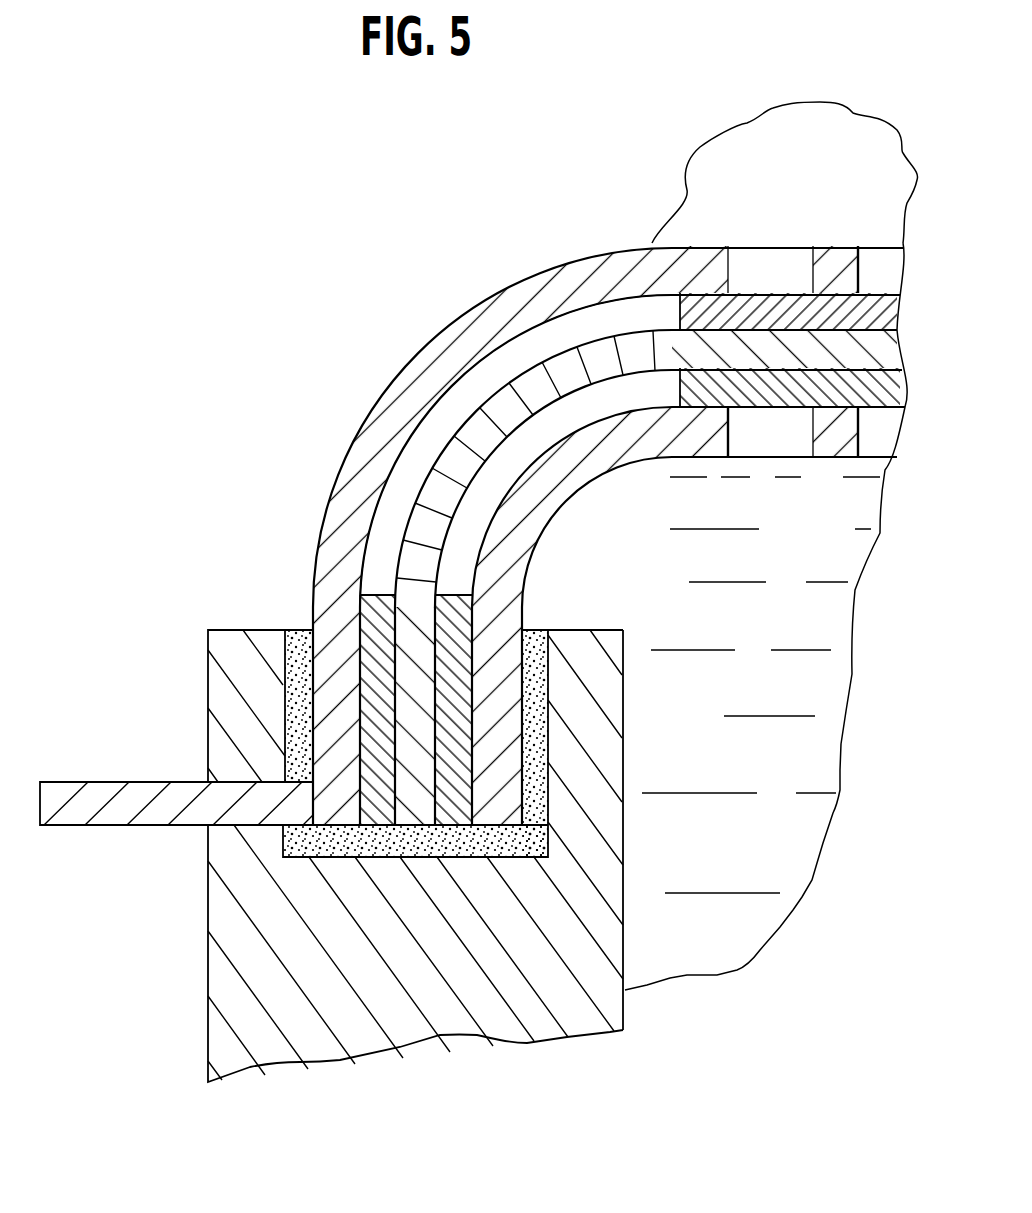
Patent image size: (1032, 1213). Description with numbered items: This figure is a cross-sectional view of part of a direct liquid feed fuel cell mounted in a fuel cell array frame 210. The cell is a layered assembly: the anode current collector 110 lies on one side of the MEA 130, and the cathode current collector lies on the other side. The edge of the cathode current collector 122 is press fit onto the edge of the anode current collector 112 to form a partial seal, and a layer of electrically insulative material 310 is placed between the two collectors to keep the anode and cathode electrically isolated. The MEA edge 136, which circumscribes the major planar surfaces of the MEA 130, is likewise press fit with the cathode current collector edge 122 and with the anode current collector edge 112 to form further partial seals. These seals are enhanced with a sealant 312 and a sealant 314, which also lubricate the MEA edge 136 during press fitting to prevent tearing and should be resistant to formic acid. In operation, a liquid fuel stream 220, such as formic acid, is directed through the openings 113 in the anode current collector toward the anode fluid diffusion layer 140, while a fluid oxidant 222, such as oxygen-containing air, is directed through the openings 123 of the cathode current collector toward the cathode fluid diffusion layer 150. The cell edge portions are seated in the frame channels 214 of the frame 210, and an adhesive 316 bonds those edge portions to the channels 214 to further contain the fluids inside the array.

The anode current collector 110 is at (577, 433).
The anode current collector edge 112 is at (517, 574).
The openings in the anode current collector major planar portion 113 is at (880, 443).
The cathode current collector edge 122 is at (345, 455).
The openings of the cathode current collector major planar portion 123 is at (747, 263).
The MEA 130 is at (547, 367).
The MEA edge 136 is at (400, 533).
The anode fluid diffusion layer 140 is at (563, 529).
The cathode fluid diffusion layer 150 is at (548, 305).
The frame 210 is at (205, 975).
The fuel cell array frame channels 214 is at (292, 630).
The liquid fuel stream 220 is at (834, 541).
The fluid oxidant 222 is at (737, 150).
The layer of electrically insulative material 310 is at (473, 850).
The sealant 312 is at (378, 593).
The sealant 314 is at (463, 725).
The adhesive 316 is at (332, 680).